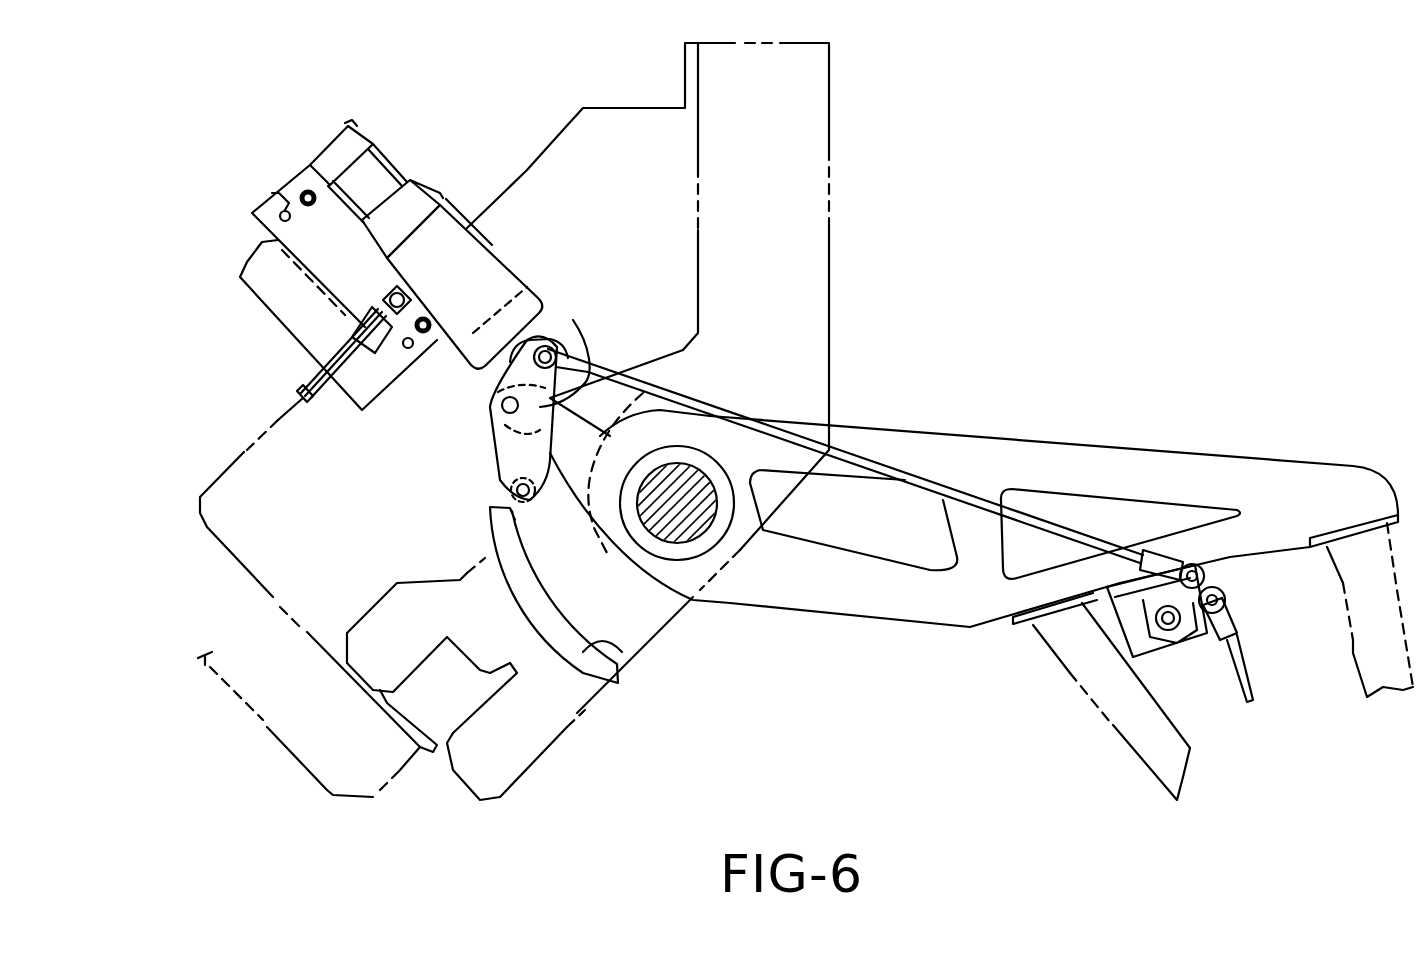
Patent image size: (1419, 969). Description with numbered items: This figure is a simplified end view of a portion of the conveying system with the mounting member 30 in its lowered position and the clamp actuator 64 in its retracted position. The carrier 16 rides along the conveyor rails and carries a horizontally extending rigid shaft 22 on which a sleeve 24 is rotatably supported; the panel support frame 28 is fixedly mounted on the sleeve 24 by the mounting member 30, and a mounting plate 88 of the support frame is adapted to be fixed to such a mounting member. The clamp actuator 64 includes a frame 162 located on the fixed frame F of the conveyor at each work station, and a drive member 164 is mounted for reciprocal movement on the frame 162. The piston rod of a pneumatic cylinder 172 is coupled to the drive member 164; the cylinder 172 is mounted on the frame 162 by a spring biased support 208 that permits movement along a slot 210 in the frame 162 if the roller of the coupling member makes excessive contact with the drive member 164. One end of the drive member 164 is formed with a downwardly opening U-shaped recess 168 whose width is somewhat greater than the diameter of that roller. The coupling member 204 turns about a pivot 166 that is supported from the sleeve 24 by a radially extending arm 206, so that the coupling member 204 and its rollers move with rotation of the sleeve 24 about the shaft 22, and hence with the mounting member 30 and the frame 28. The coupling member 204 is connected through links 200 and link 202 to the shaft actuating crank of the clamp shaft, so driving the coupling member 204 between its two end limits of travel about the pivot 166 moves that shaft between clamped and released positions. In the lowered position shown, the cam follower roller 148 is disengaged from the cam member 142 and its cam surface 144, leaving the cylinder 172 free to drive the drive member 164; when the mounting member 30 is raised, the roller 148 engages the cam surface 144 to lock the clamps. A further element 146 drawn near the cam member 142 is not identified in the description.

The carrier 16 is at (698, 160).
The fixed frame F is at (565, 160).
The horizontally extending rigid shaft 22 is at (667, 533).
The sleeve 24 is at (693, 447).
The panel support frame 28 is at (1113, 727).
The mounting member 30 is at (967, 430).
The clamp actuator 64 is at (457, 183).
The mounting plate 88 is at (1327, 547).
The cam member 142 is at (520, 593).
The cam surface 144 is at (583, 675).
The roller 146 is at (585, 650).
The cam follower roller 148 is at (507, 490).
The frame 162 is at (268, 185).
The drive member 164 is at (553, 337).
The pivot 166 is at (497, 418).
The U-shaped recess 168 is at (552, 347).
The pneumatic cylinder 172 is at (388, 148).
The links 200 is at (1247, 700).
The link 202 is at (902, 480).
The coupling member 204 is at (493, 457).
The radially extending arm 206 is at (560, 497).
The spring biased support 208 is at (300, 378).
The slot 210 is at (283, 213).